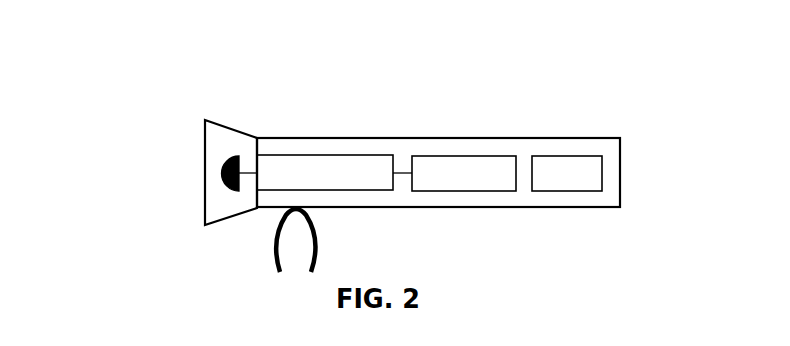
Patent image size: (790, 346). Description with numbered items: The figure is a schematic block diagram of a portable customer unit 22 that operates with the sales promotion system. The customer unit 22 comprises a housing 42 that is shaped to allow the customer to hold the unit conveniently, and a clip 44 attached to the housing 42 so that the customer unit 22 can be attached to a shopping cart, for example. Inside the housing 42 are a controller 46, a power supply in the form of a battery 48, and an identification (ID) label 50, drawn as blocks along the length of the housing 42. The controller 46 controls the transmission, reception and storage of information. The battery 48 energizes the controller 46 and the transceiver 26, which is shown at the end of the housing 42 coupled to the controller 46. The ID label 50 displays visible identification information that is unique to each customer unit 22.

The customer unit 22 is at (488, 82).
The transceiver 26 is at (221, 172).
The housing 42 is at (502, 138).
The clip 44 is at (272, 230).
The controller 46 is at (357, 191).
The battery 48 is at (483, 191).
The identification (ID) label 50 is at (585, 191).